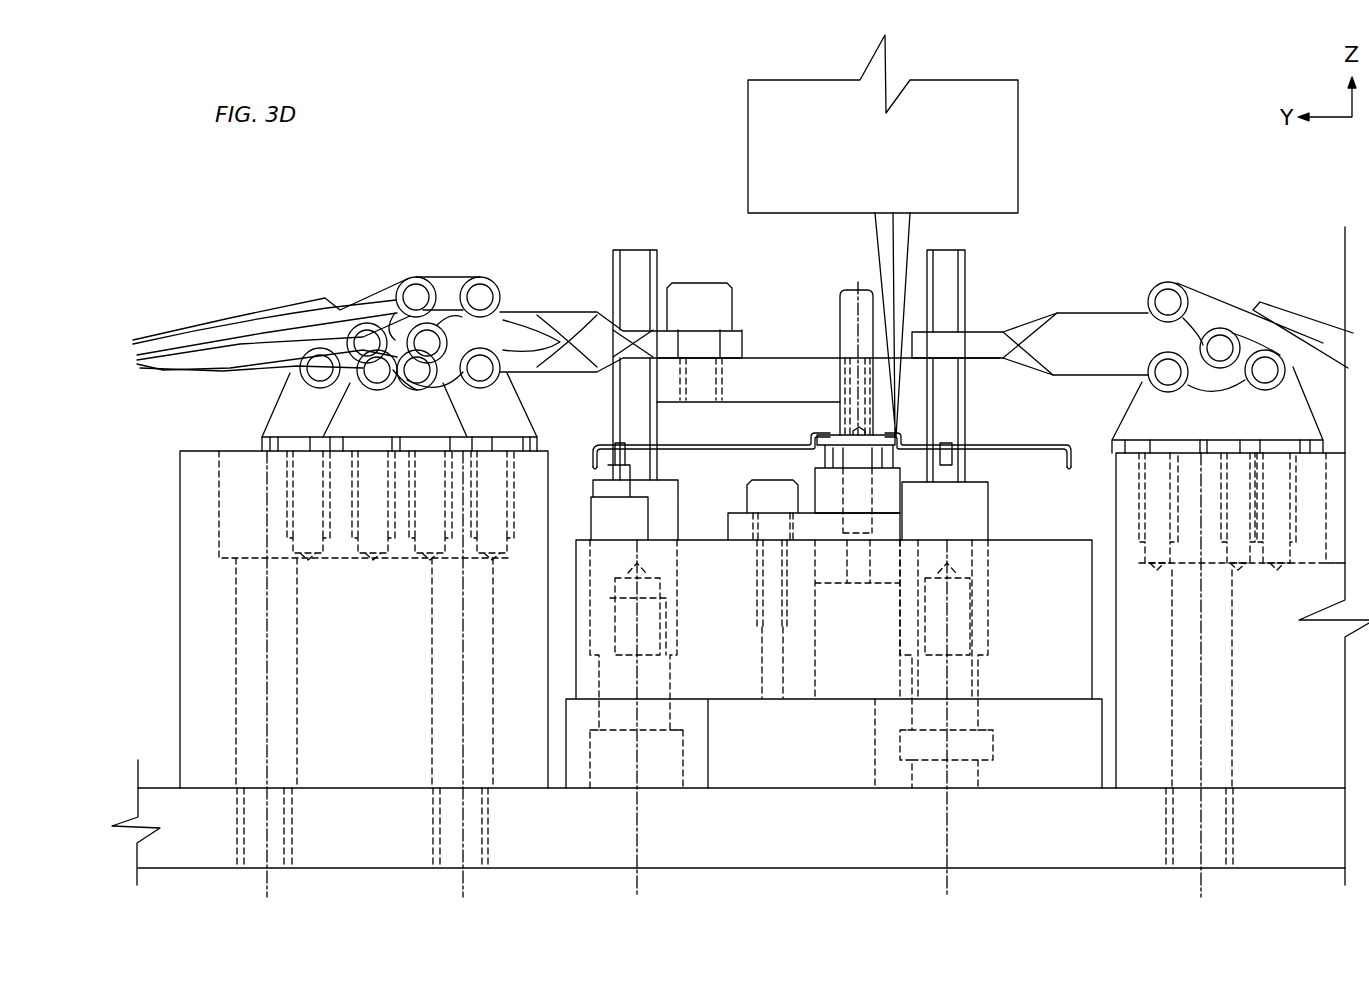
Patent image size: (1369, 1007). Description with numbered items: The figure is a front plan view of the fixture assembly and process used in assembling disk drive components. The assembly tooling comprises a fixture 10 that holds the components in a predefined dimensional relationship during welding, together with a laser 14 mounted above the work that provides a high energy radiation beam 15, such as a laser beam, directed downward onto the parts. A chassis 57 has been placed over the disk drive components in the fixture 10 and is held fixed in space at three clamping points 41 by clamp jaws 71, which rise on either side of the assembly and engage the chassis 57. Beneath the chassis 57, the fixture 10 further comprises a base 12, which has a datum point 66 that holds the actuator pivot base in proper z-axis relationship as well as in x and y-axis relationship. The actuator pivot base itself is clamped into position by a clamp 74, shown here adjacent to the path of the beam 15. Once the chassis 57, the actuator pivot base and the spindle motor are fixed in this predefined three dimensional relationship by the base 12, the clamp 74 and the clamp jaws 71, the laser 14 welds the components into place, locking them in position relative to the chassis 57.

The fixture 10 is at (1210, 241).
The base 12 is at (1062, 644).
The laser 14 is at (968, 151).
The high energy radiation beam 15 is at (912, 242).
The clamping points 41 is at (632, 450).
The chassis 57 is at (724, 445).
The datum point 66 is at (835, 442).
The clamp jaws 71 is at (613, 279).
The clamp 74 is at (840, 308).